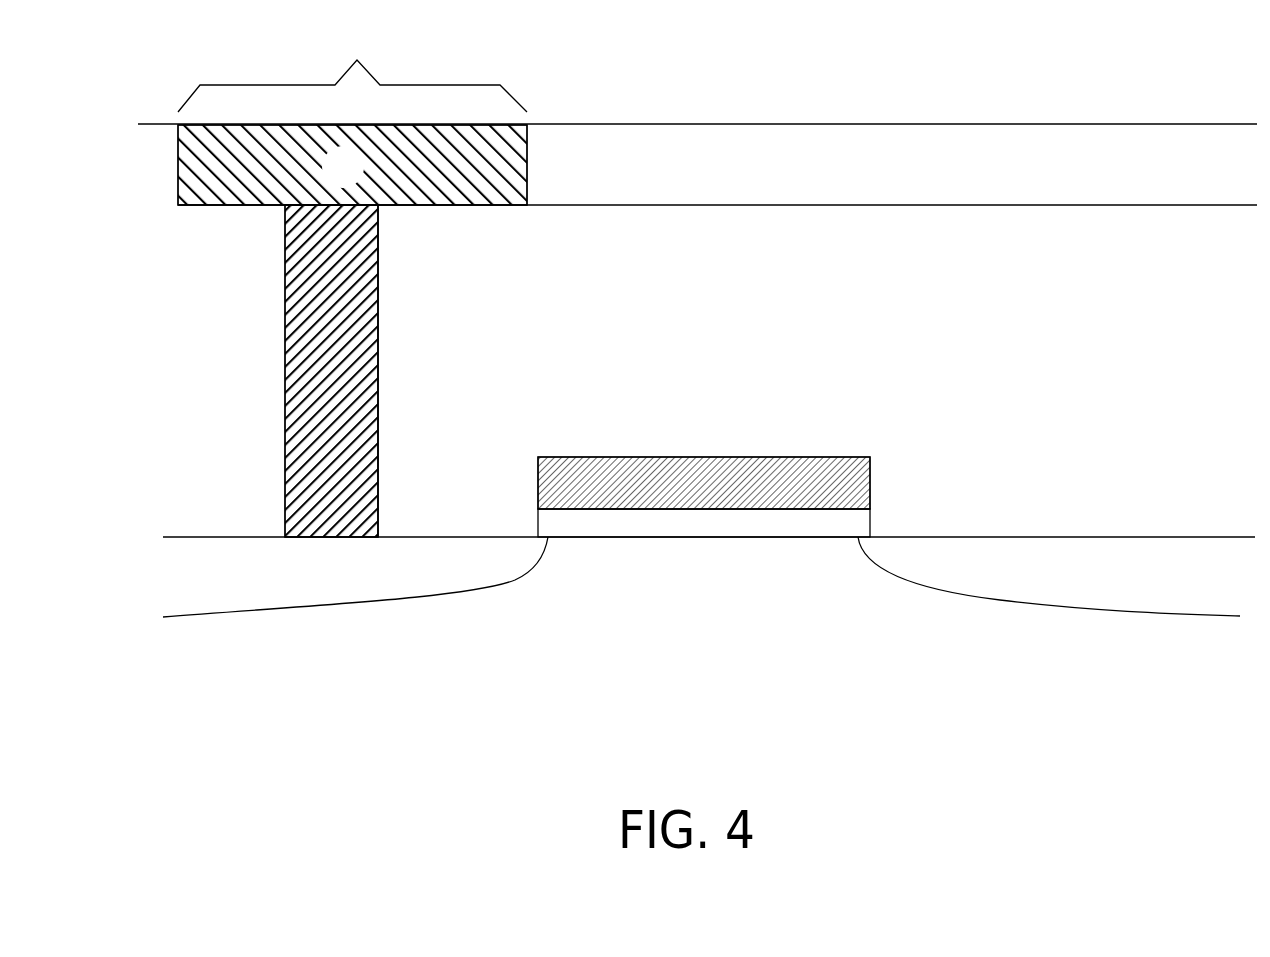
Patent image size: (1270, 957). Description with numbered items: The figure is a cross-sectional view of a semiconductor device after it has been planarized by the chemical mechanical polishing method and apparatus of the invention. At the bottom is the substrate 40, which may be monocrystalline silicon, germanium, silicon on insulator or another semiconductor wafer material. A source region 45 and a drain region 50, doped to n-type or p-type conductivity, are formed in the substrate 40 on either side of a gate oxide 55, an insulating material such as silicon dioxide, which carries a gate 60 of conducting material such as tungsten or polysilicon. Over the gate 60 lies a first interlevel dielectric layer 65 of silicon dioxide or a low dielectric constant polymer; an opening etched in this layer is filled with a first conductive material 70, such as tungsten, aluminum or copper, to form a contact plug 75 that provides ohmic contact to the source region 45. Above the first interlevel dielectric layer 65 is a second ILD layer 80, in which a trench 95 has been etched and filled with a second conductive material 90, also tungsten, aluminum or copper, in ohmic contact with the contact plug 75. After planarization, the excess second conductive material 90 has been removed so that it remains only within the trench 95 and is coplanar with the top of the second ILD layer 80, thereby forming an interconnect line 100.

The substrate 40 is at (717, 630).
The source region 45 is at (319, 593).
The drain region 50 is at (1144, 593).
The gate oxide 55 is at (872, 521).
The gate 60 is at (700, 455).
The first interlevel dielectric layer 65 is at (1077, 340).
The first conductive material 70 is at (305, 323).
The contact plug 75 is at (380, 360).
The second ILD layer 80 is at (732, 180).
The second conductive material 90 is at (361, 182).
The trench 95 is at (352, 64).
The interconnect line 100 is at (530, 160).